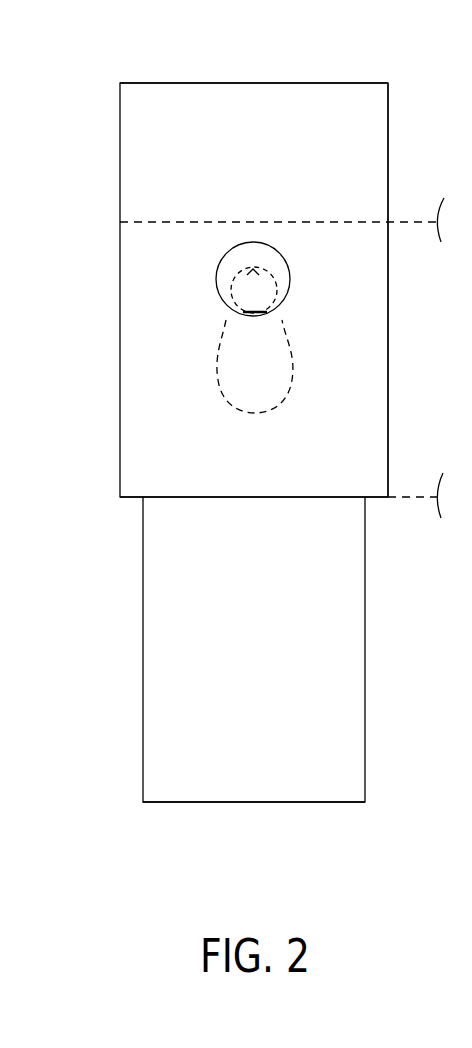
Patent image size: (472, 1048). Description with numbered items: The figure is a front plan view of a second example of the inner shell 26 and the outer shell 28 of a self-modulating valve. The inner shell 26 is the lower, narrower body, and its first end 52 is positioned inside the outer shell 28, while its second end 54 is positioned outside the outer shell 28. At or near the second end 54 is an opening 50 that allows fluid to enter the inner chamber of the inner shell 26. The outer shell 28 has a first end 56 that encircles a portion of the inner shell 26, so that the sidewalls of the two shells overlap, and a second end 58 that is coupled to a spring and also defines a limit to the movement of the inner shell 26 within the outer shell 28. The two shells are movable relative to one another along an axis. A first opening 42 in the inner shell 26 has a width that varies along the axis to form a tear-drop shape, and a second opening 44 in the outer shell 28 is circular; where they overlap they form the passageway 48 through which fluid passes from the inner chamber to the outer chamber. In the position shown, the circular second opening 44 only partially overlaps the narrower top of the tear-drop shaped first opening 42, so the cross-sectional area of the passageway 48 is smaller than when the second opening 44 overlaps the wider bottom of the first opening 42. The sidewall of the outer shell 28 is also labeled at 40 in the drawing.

The inner shell 26 is at (143, 702).
The outer shell 28 is at (120, 145).
The side wall 40 is at (388, 177).
The first opening 42 is at (217, 365).
The second opening 44 is at (290, 265).
The passageway 48 is at (254, 290).
The opening 50 is at (232, 822).
The first end 52 is at (188, 220).
The second end 54 is at (152, 803).
The first end 56 is at (205, 497).
The second end 58 is at (220, 83).